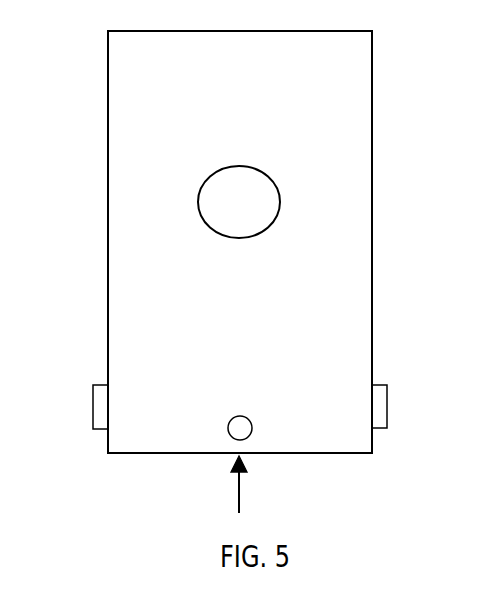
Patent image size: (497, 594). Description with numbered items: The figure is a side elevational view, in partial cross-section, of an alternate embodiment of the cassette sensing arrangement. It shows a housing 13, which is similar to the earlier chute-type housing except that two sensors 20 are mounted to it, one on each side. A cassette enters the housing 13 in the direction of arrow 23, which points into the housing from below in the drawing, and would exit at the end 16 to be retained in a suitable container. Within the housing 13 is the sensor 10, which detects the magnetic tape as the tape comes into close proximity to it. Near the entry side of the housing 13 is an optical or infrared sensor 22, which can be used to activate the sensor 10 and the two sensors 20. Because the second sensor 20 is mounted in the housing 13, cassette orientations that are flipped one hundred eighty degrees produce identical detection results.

The housing 13 is at (372, 83).
The end 16 is at (236, 64).
The sensor 10 is at (277, 192).
The sensors 20 is at (93, 392).
The optical or infrared sensor 22 is at (252, 420).
The arrow 23 is at (255, 484).